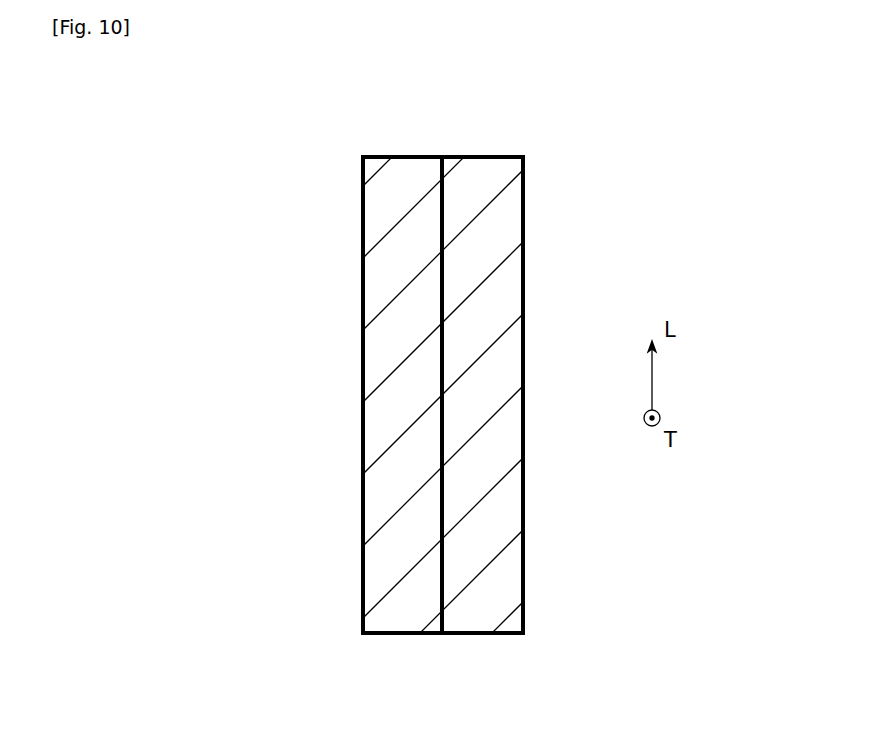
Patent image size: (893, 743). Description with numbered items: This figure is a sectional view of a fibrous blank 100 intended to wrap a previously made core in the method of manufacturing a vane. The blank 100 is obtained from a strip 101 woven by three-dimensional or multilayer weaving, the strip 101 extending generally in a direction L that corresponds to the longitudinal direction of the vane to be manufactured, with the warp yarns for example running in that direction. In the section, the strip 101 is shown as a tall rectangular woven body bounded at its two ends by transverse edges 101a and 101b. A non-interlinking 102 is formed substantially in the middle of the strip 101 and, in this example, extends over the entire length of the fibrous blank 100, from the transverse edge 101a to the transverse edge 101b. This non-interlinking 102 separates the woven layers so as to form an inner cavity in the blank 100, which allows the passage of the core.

The fibrous blank 100 is at (596, 194).
The strip 101 is at (385, 275).
The transverse edge 101a is at (490, 156).
The transverse edge 101b is at (396, 636).
The non-interlinking 102 is at (445, 487).